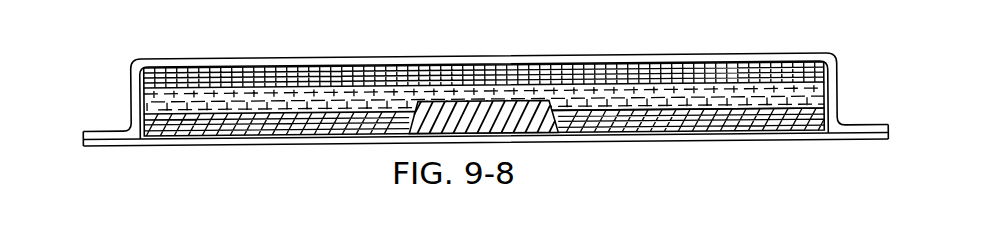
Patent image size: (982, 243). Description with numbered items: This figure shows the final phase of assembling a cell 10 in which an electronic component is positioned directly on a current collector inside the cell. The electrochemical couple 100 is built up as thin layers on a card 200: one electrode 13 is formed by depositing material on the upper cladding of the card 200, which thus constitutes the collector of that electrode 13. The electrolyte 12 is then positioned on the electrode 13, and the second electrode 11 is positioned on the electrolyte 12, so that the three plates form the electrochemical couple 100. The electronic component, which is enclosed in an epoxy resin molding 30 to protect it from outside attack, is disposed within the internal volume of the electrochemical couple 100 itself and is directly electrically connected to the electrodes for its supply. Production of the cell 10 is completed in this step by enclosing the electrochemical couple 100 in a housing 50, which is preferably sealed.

The cell 10 is at (129, 103).
The electrochemical couple 100 is at (824, 93).
The card 200 is at (585, 147).
The housing 50 is at (210, 66).
The electrode 11 is at (312, 73).
The electrolyte 12 is at (568, 99).
The electrode 13 is at (740, 125).
The epoxy resin molding 30 is at (442, 111).